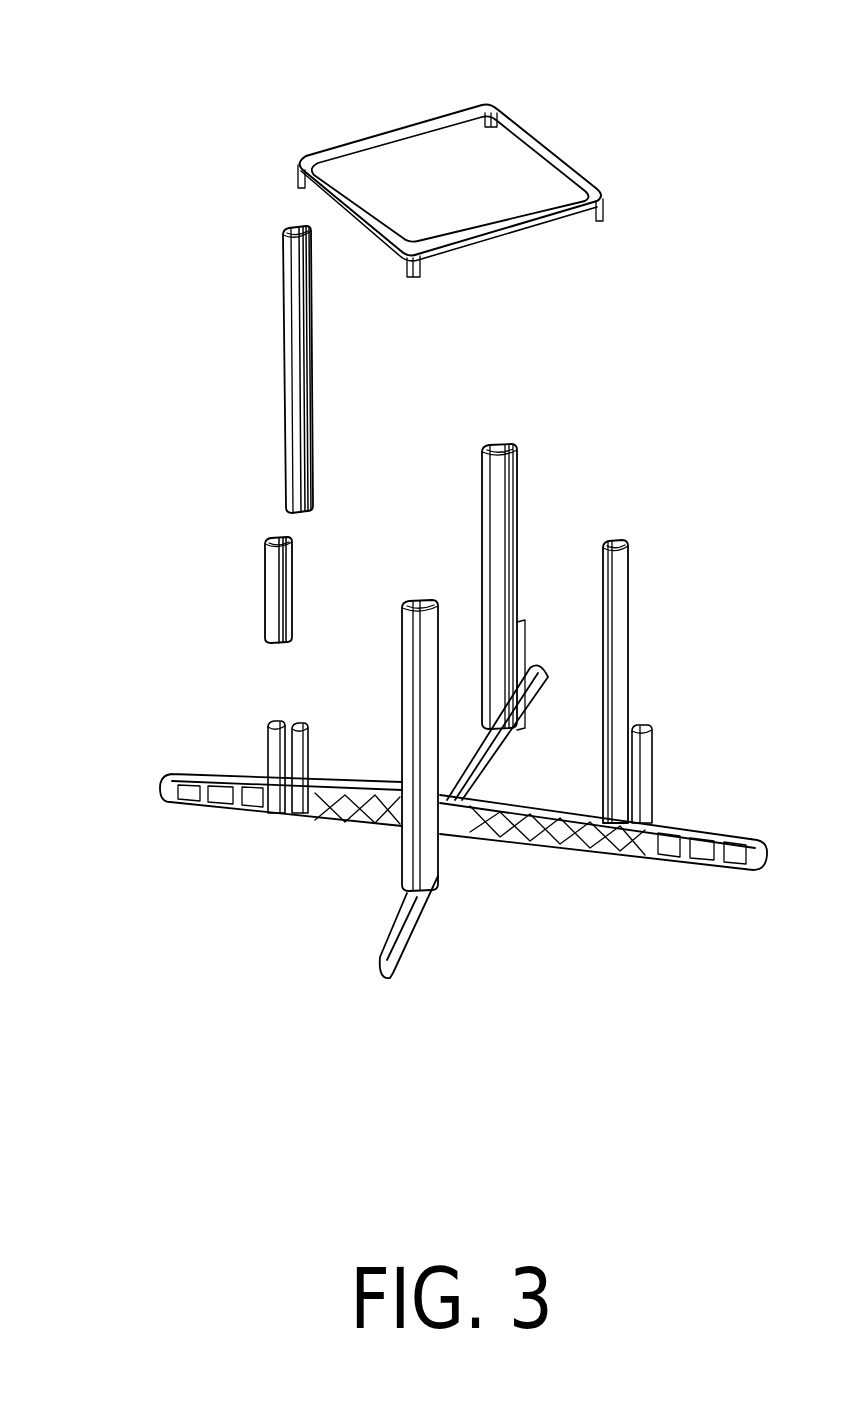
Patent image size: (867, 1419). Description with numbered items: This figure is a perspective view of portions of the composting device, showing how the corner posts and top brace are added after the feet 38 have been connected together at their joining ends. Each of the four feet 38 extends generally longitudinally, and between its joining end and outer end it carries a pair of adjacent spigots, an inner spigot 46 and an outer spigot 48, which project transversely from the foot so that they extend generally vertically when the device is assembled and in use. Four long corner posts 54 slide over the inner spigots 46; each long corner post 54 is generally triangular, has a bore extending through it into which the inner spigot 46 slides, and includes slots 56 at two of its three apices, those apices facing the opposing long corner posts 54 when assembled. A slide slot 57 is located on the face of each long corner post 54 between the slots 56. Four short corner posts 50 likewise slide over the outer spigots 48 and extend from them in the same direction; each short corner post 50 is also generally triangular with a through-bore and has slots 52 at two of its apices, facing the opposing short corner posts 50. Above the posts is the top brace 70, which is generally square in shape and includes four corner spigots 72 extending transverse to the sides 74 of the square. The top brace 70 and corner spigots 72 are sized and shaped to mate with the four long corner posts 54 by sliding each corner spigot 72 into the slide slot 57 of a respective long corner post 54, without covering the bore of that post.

The top brace 70 is at (397, 139).
The sides 74 is at (557, 143).
The corner spigots 72 is at (607, 203).
The slide slot 57 is at (283, 232).
The long corner posts 54 is at (255, 340).
The slots 56 is at (290, 437).
The short corner posts 50 is at (259, 548).
The slots 52 is at (290, 583).
The outer spigot 48 is at (273, 717).
The inner spigot 46 is at (290, 717).
The feet 38 is at (243, 810).